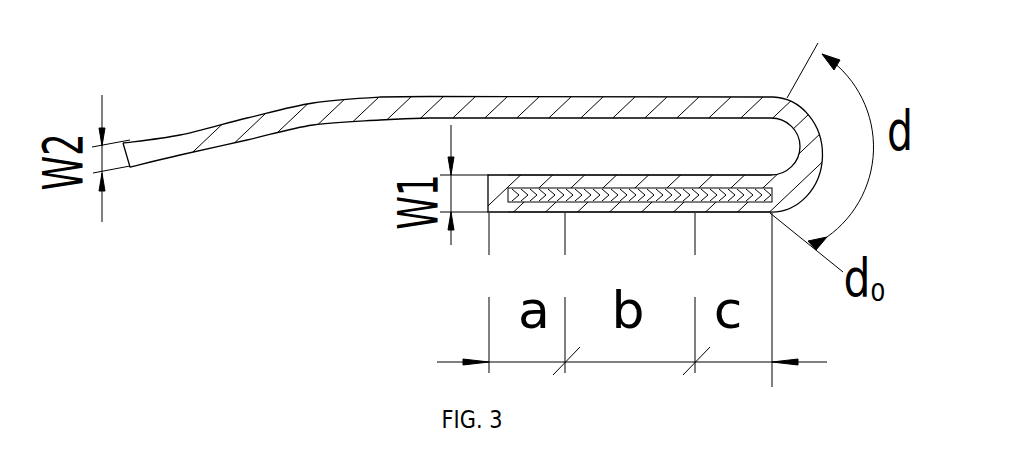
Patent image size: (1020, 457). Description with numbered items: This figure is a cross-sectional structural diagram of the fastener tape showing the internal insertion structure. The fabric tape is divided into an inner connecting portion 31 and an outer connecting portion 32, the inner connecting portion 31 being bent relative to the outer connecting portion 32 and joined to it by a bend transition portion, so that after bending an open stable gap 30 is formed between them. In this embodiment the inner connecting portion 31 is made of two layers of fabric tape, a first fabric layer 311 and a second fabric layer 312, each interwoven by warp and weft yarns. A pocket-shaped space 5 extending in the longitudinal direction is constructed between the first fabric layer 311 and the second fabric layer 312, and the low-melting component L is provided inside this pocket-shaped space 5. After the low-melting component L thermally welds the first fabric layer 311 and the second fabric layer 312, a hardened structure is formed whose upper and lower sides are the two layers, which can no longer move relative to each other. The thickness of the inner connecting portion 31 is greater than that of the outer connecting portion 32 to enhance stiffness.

The open stable gap 30 is at (752, 155).
The inner connecting portion 31 is at (577, 136).
The outer connecting portion 32 is at (397, 100).
The pocket-shaped space 5 is at (618, 197).
The first fabric layer 311 is at (667, 182).
The second fabric layer 312 is at (595, 208).
The low-melting component L is at (583, 193).